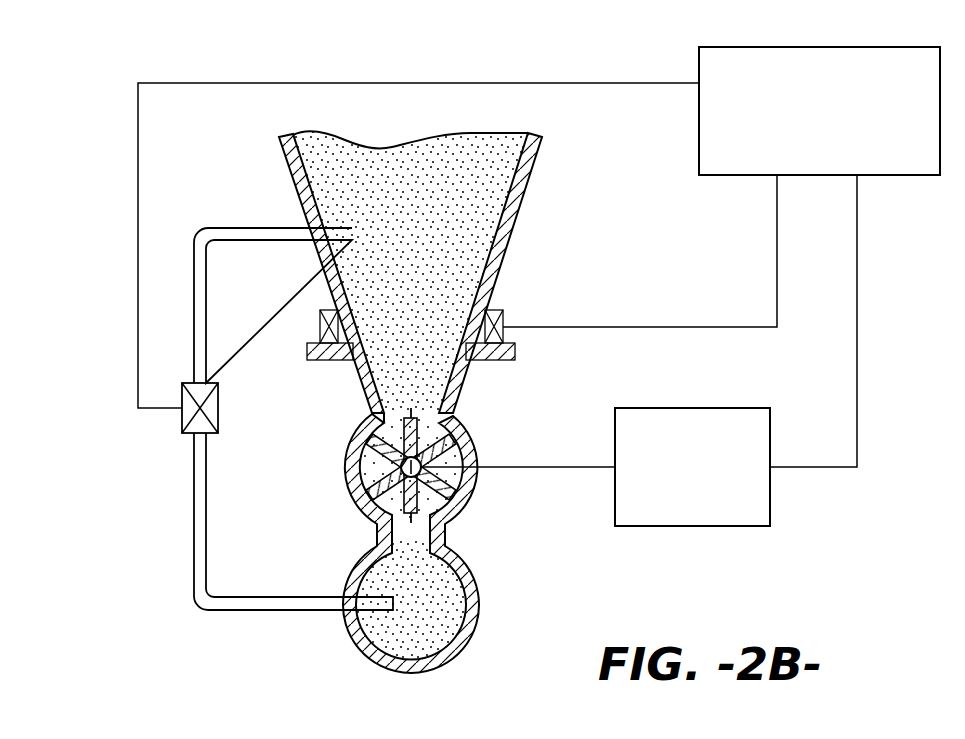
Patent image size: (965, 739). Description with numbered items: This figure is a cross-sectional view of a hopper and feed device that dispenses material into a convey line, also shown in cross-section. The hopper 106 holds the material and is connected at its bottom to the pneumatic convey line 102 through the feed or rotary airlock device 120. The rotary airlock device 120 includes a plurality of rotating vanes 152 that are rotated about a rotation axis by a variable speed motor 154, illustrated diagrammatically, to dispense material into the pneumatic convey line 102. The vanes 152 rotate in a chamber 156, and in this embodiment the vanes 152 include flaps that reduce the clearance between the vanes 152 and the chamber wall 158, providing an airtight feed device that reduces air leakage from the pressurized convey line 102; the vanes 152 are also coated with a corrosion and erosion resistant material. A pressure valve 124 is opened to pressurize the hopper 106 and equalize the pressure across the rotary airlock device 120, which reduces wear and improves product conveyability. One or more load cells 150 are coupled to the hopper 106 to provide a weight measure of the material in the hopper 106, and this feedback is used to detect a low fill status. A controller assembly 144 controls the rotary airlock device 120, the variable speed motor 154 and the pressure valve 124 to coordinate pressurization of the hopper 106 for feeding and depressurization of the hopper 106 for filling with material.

The pneumatic convey line 102 is at (480, 595).
The hopper 106 is at (525, 205).
The rotary airlock device 120 is at (490, 437).
The pressure valve 124 is at (178, 418).
The controller assembly 144 is at (822, 44).
The load cells 150 is at (503, 320).
The rotating vanes 152 is at (455, 483).
The variable speed motor 154 is at (707, 408).
The chamber 156 is at (393, 426).
The chamber wall 158 is at (373, 462).